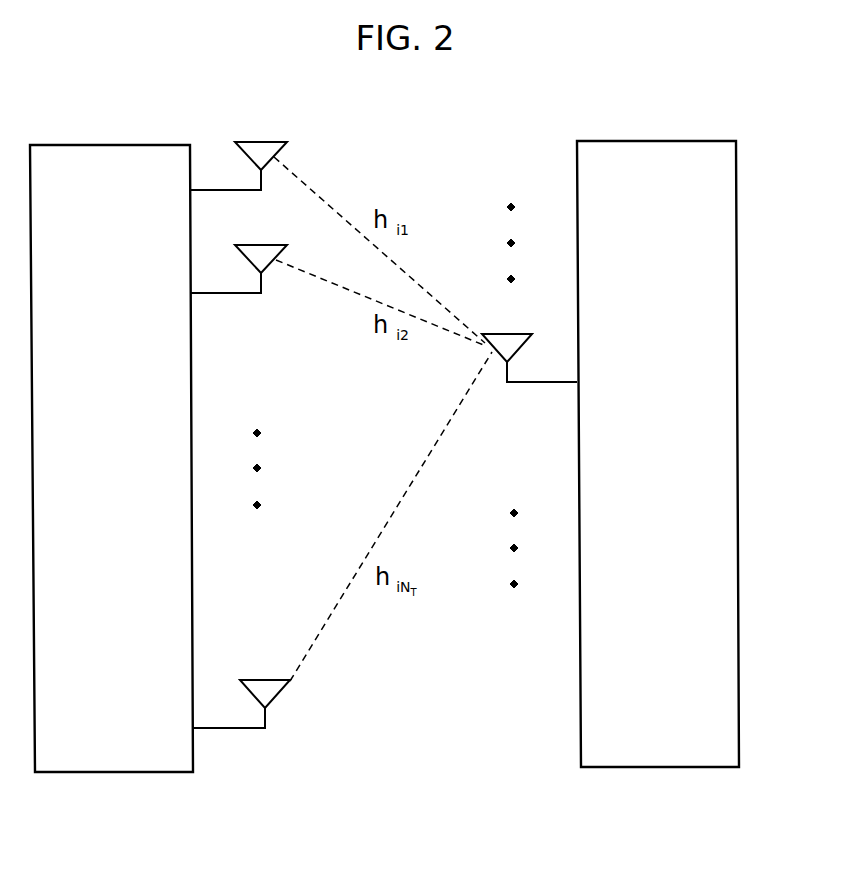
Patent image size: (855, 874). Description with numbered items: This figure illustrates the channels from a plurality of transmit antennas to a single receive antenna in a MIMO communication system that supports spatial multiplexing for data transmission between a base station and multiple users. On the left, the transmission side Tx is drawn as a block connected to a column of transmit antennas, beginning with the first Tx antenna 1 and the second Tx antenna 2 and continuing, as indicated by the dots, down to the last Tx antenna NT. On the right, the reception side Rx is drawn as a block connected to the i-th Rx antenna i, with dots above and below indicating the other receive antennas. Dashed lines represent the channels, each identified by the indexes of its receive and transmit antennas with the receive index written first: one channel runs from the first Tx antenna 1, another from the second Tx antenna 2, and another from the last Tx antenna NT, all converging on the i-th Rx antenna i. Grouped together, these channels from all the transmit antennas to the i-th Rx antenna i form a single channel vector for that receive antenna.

The transmission Tx is at (111, 458).
The reception Rx is at (658, 454).
The first Tx antenna 1 is at (238, 171).
The second Tx antenna 2 is at (238, 275).
The N_T-th Tx antenna NT is at (247, 713).
The i-th Rx antenna i is at (529, 366).